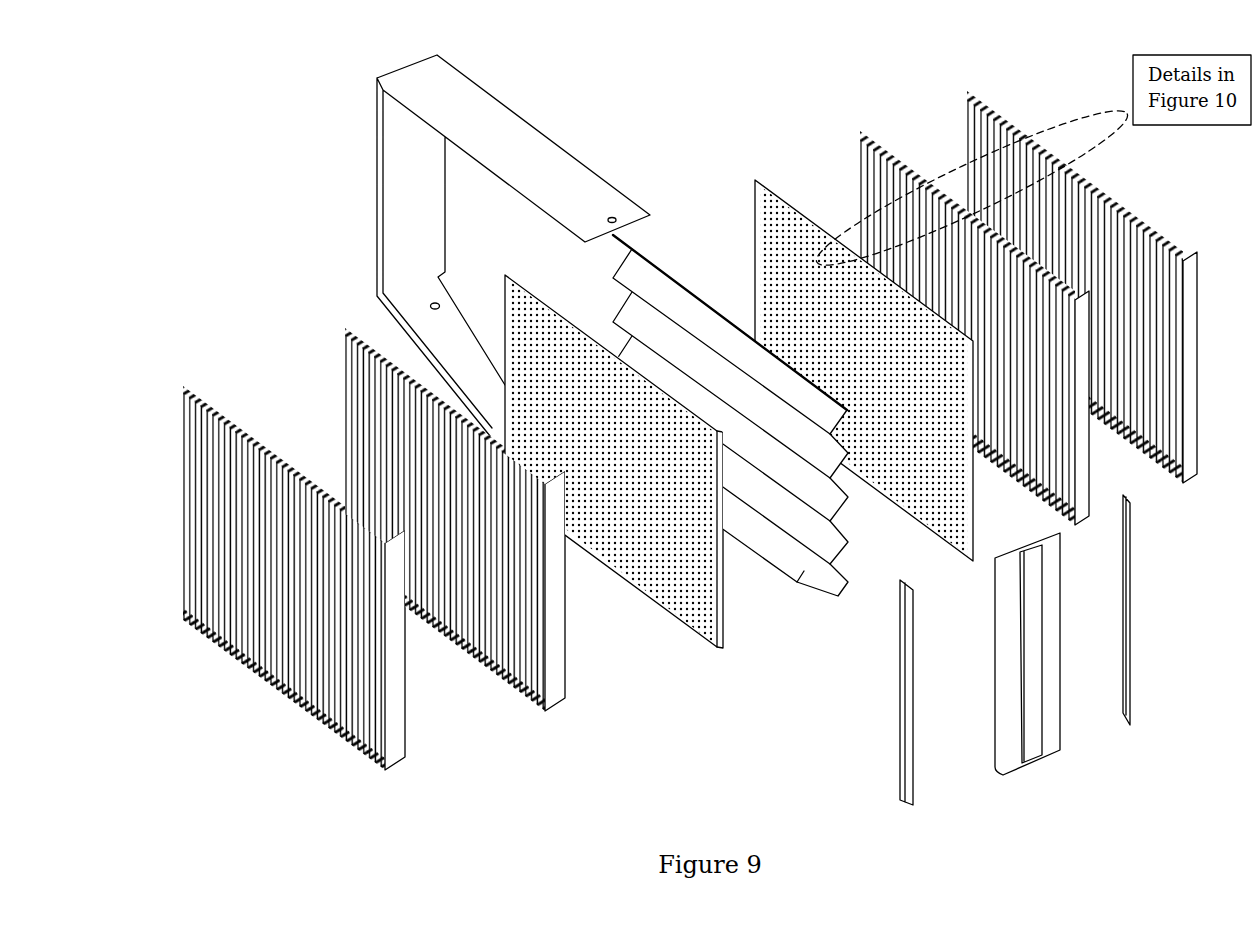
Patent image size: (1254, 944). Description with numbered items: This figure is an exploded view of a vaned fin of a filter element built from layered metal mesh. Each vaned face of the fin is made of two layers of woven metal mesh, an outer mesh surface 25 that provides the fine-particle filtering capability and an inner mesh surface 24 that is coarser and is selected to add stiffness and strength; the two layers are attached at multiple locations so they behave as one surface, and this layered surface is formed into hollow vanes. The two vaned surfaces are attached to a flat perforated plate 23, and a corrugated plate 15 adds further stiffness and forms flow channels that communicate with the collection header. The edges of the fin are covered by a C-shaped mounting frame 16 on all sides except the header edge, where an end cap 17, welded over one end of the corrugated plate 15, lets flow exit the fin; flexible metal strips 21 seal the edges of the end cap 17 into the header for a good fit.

The corrugated plate 15 is at (819, 542).
The C-shaped mounting frame 16 is at (500, 118).
The end cap 17 is at (1052, 675).
The flexible metal strips 21 is at (903, 715).
The flat perforated plate 23 is at (530, 325).
The inner mesh surface 24 is at (370, 391).
The outer mesh surface 25 is at (399, 694).